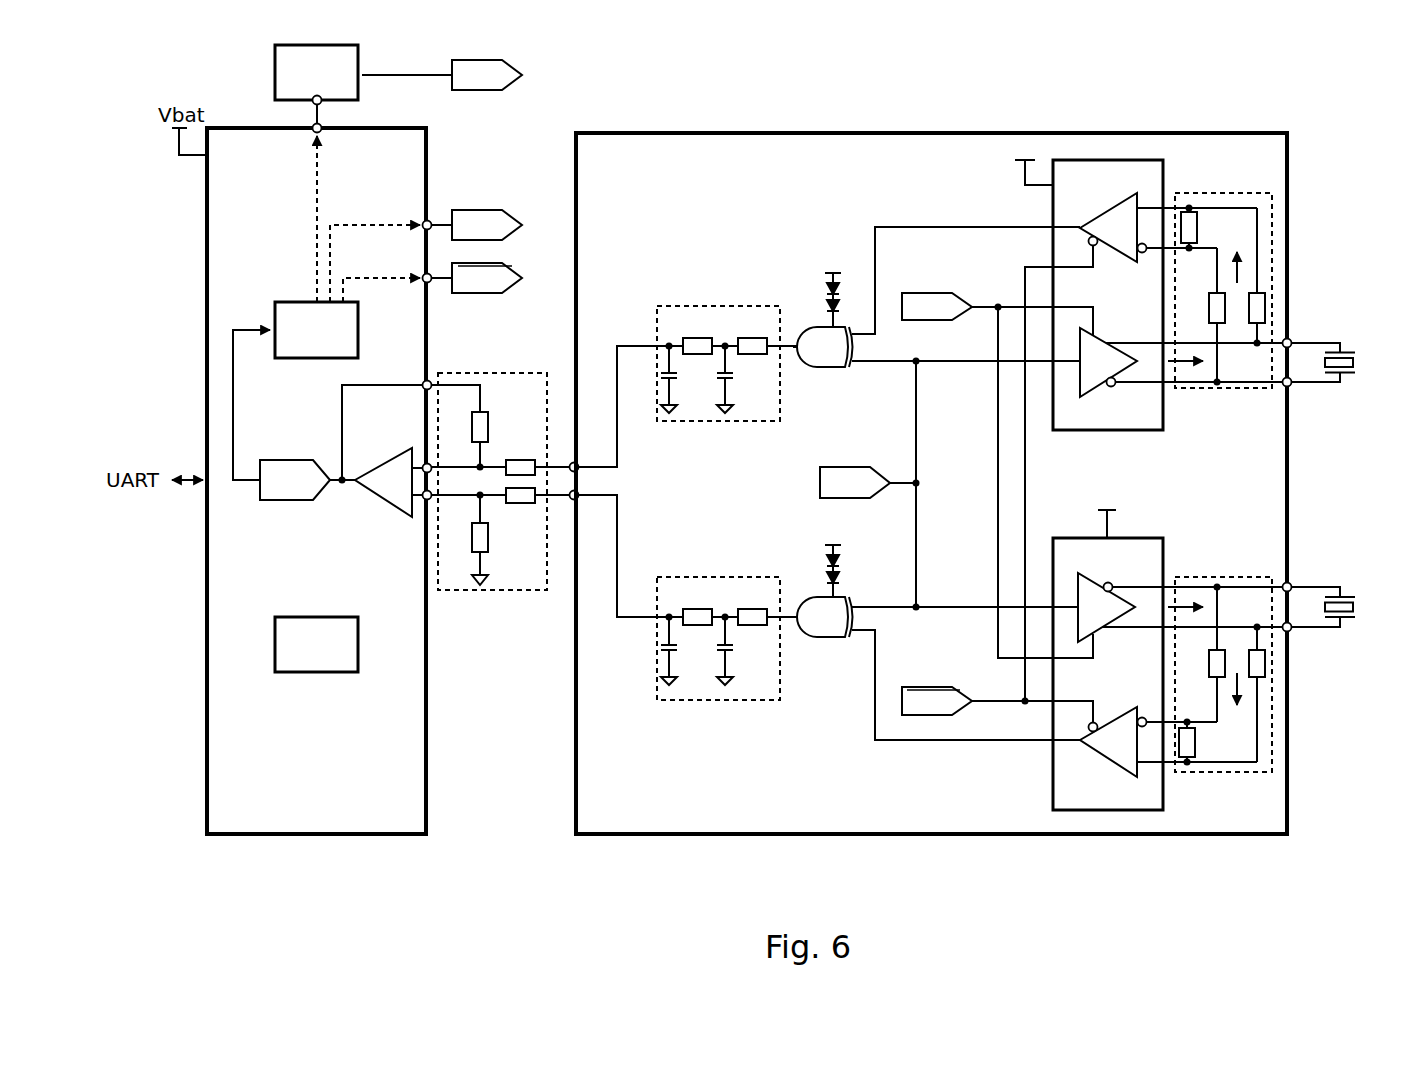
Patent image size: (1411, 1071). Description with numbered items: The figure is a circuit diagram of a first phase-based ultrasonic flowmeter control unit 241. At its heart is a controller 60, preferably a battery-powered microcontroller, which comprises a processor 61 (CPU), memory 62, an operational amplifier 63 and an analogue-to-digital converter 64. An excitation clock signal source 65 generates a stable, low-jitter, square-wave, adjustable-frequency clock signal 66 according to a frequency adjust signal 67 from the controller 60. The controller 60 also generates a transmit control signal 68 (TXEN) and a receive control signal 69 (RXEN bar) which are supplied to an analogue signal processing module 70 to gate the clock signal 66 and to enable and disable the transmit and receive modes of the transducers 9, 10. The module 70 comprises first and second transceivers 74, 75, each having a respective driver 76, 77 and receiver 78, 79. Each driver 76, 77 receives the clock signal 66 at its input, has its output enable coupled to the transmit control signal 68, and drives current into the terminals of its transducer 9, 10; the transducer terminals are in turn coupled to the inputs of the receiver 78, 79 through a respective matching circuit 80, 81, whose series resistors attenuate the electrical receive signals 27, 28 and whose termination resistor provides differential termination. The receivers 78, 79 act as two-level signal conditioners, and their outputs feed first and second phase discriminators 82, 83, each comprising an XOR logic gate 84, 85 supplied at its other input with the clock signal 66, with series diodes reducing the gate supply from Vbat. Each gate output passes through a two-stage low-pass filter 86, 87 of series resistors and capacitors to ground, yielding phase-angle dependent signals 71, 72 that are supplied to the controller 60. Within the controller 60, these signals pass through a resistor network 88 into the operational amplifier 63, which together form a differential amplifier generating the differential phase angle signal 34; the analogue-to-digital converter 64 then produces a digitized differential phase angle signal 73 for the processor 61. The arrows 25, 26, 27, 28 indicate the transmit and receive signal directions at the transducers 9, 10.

The transducer 9 is at (1358, 336).
The transducer 10 is at (1358, 590).
The first phase-based ultrasonic flowmeter control unit 241 is at (1302, 895).
The transmit signal path 25 is at (1188, 364).
The transmit signal path 26 is at (1188, 603).
The electrical receive signal 27 is at (1237, 273).
The electrical receive signal 28 is at (1237, 693).
The differential phase angle signal 34 is at (339, 485).
The controller 60 is at (232, 835).
The processor 61 is at (316, 358).
The memory 62 is at (316, 672).
The operational amplifier 63 is at (384, 500).
The analogue-to-digital converter 64 is at (289, 500).
The excitation clock signal source 65 is at (275, 74).
The adjustable-frequency clock signal 66 is at (479, 100).
The frequency adjust signal 67 is at (310, 106).
The transmit control signal 68 is at (476, 210).
The receive control signal 69 is at (479, 295).
The analogue signal processing module 70 is at (603, 835).
The phase-angle dependent signal 71 is at (566, 466).
The phase-angle dependent signal 72 is at (566, 500).
The digitized differential phase angle signal 73 is at (246, 483).
The first transceiver 74 is at (1066, 430).
The second transceiver 75 is at (1064, 538).
The driver 76 is at (1097, 387).
The driver 77 is at (1090, 580).
The receiver 78 is at (1120, 204).
The receiver 79 is at (1118, 765).
The matching circuit 80 is at (1235, 388).
The matching circuit 81 is at (1235, 772).
The first phase discriminator 82 is at (786, 281).
The second phase discriminator 83 is at (786, 554).
The XOR logic gate 84 is at (835, 367).
The XOR logic gate 85 is at (835, 637).
The low-pass filter 86 is at (767, 421).
The low-pass filter 87 is at (767, 700).
The resistor network 88 is at (452, 590).